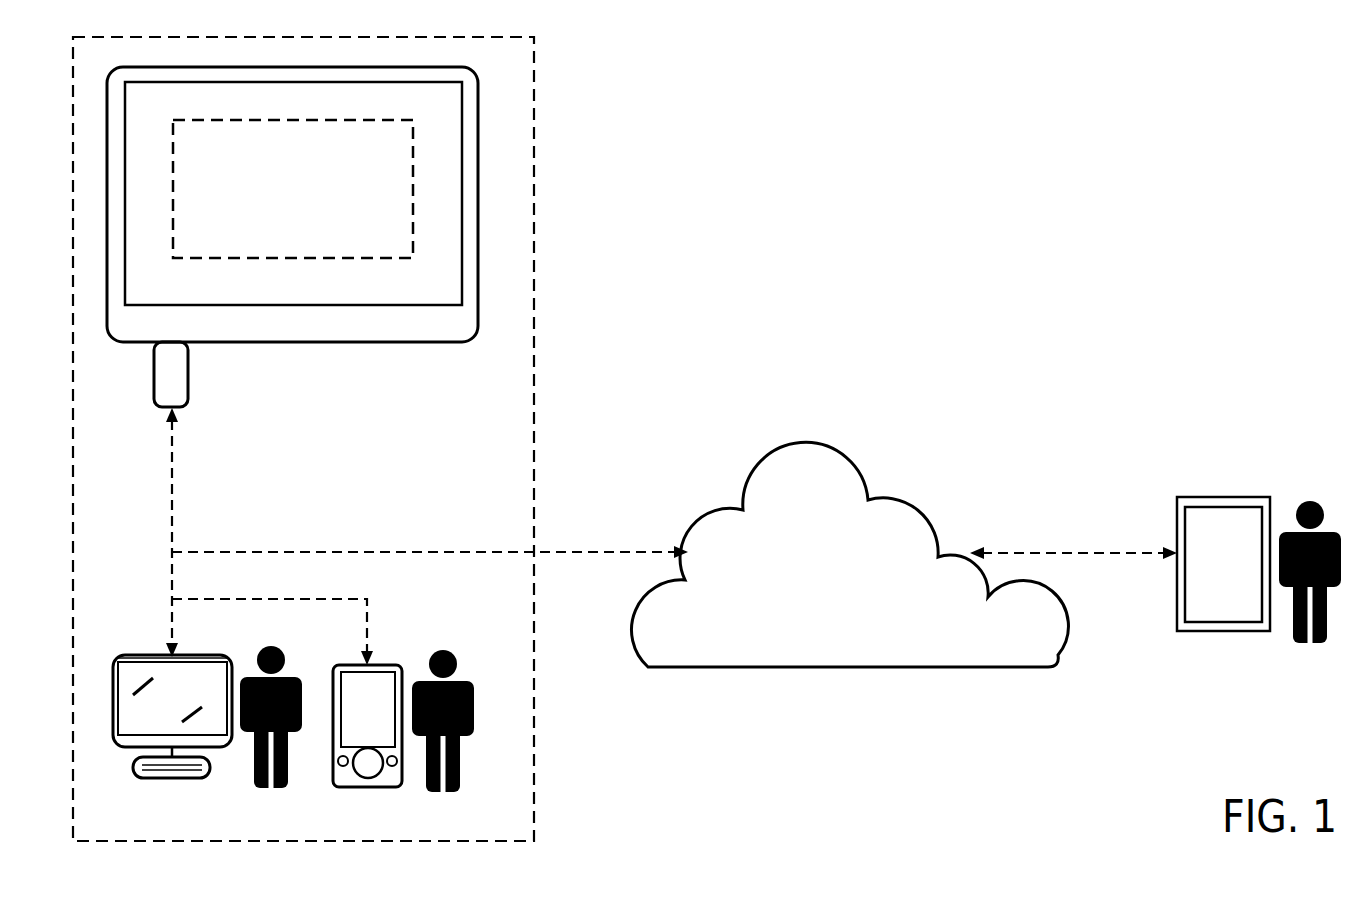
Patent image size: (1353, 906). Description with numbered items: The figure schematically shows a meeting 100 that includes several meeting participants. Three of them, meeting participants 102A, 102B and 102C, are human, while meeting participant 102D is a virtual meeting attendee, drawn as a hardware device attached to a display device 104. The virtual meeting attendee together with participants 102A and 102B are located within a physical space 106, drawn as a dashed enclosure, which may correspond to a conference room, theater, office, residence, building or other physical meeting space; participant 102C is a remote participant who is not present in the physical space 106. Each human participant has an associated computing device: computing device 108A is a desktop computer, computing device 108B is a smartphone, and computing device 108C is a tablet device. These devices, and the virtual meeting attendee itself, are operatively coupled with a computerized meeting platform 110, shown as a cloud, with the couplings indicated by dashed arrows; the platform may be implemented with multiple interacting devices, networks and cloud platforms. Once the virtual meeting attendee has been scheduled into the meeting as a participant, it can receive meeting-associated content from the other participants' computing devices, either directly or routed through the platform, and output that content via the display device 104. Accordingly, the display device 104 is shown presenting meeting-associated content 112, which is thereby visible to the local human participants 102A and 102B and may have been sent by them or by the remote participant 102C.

The meeting 100 is at (962, 80).
The meeting participant 102A is at (253, 779).
The meeting participant 102B is at (445, 650).
The meeting participant 102C is at (1308, 501).
The meeting participant 102D is at (188, 373).
The display device 104 is at (370, 342).
The physical space 106 is at (535, 157).
The computing device 108A is at (114, 711).
The computing device 108B is at (365, 787).
The computing device 108C is at (1223, 631).
The computerized meeting platform 110 is at (793, 633).
The meeting-associated content 112 is at (401, 253).